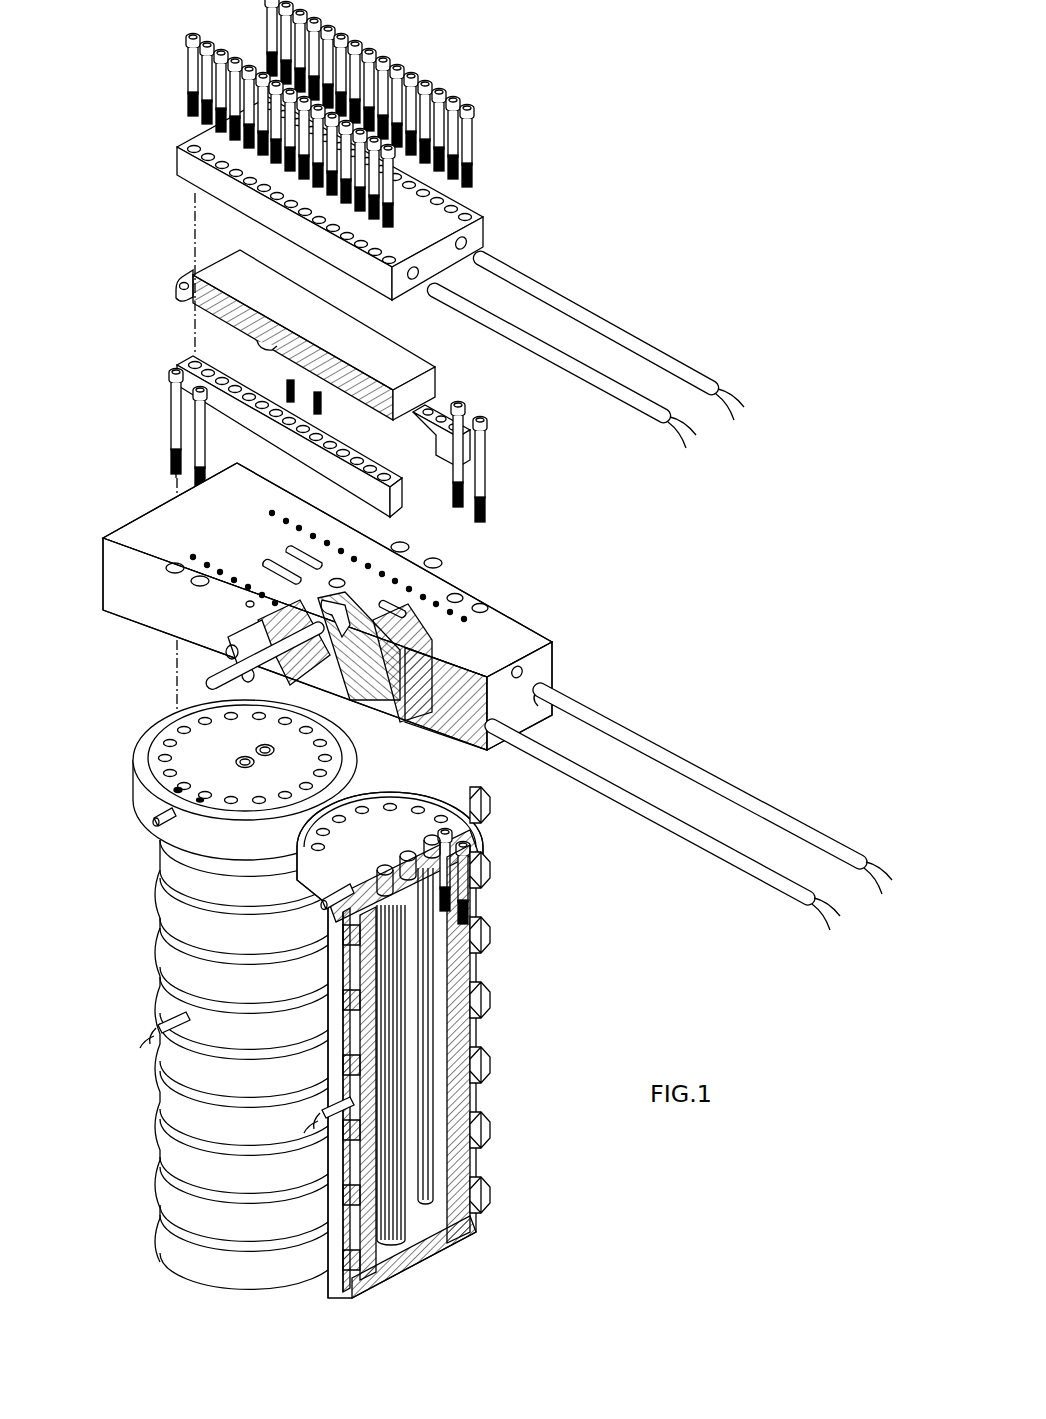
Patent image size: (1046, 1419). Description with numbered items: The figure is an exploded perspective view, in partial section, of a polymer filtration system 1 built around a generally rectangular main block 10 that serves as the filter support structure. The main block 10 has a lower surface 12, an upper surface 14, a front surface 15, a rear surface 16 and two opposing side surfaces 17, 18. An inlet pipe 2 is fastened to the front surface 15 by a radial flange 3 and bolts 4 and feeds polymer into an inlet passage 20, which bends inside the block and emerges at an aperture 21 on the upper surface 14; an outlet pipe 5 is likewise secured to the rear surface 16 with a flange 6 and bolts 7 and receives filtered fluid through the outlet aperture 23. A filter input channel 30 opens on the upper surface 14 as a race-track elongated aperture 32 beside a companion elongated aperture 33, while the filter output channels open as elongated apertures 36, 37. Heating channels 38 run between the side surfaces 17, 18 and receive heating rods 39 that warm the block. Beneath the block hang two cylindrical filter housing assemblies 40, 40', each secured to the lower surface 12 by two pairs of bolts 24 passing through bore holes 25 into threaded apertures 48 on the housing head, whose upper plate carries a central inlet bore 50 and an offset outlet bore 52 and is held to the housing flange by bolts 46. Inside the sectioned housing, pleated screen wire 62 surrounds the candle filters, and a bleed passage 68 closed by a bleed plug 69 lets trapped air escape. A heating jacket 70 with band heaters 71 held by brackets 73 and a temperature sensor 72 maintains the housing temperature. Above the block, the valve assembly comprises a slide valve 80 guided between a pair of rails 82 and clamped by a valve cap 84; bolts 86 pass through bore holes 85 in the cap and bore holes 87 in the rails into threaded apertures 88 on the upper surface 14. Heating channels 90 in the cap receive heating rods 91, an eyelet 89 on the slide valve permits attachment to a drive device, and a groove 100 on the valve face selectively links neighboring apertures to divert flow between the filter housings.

The filtration system 1 is at (694, 180).
The inlet pipe 2 is at (225, 686).
The flange 3 is at (218, 650).
The bolts 4 is at (213, 670).
The outlet pipe 5 is at (440, 562).
The flange 6 is at (396, 538).
The bolts 7 is at (417, 548).
The main block 10 is at (85, 536).
The lower surface 12 is at (115, 610).
The upper surface 14 is at (529, 626).
The front surface 15 is at (108, 584).
The rear surface 16 is at (555, 654).
The side surface 17 is at (540, 720).
The side surface 18 is at (146, 515).
The inlet passage 20 is at (294, 674).
The aperture 21 is at (339, 676).
The aperture 23 is at (302, 548).
The bolts 24 is at (174, 416).
The bore holes 25 is at (180, 580).
The filter input channel 30 is at (394, 703).
The elongated aperture 32 is at (408, 641).
The elongated aperture 33 is at (268, 562).
The elongated aperture 36 is at (395, 601).
The elongated aperture 37 is at (332, 580).
The heating channels 38 is at (252, 606).
The heating rods 39 is at (717, 760).
The filter housing assembly 40 is at (460, 1045).
The filter housing assembly 40' is at (203, 981).
The bolts 46 is at (256, 800).
The threaded apertures 48 is at (170, 791).
The inlet bore 50 is at (238, 759).
The outlet bore 52 is at (262, 748).
The screen wire 62 is at (414, 1246).
The bleed passage 68 is at (390, 856).
The bleed plug 69 is at (162, 820).
The heating jacket 70 is at (168, 1132).
The band heaters 71 is at (160, 1168).
The temperature sensor 72 is at (150, 1040).
The brackets 73 is at (508, 830).
The slide valve 80 is at (428, 370).
The rails 82 is at (471, 454).
The valve cap 84 is at (480, 228).
The bore holes 85 is at (194, 146).
The bolts 86 is at (194, 30).
The bore holes 87 is at (176, 370).
The threaded apertures 88 is at (195, 556).
The eyelet 89 is at (180, 286).
The heating channels 90 is at (464, 243).
The heating rods 91 is at (606, 324).
The groove 100 is at (268, 348).